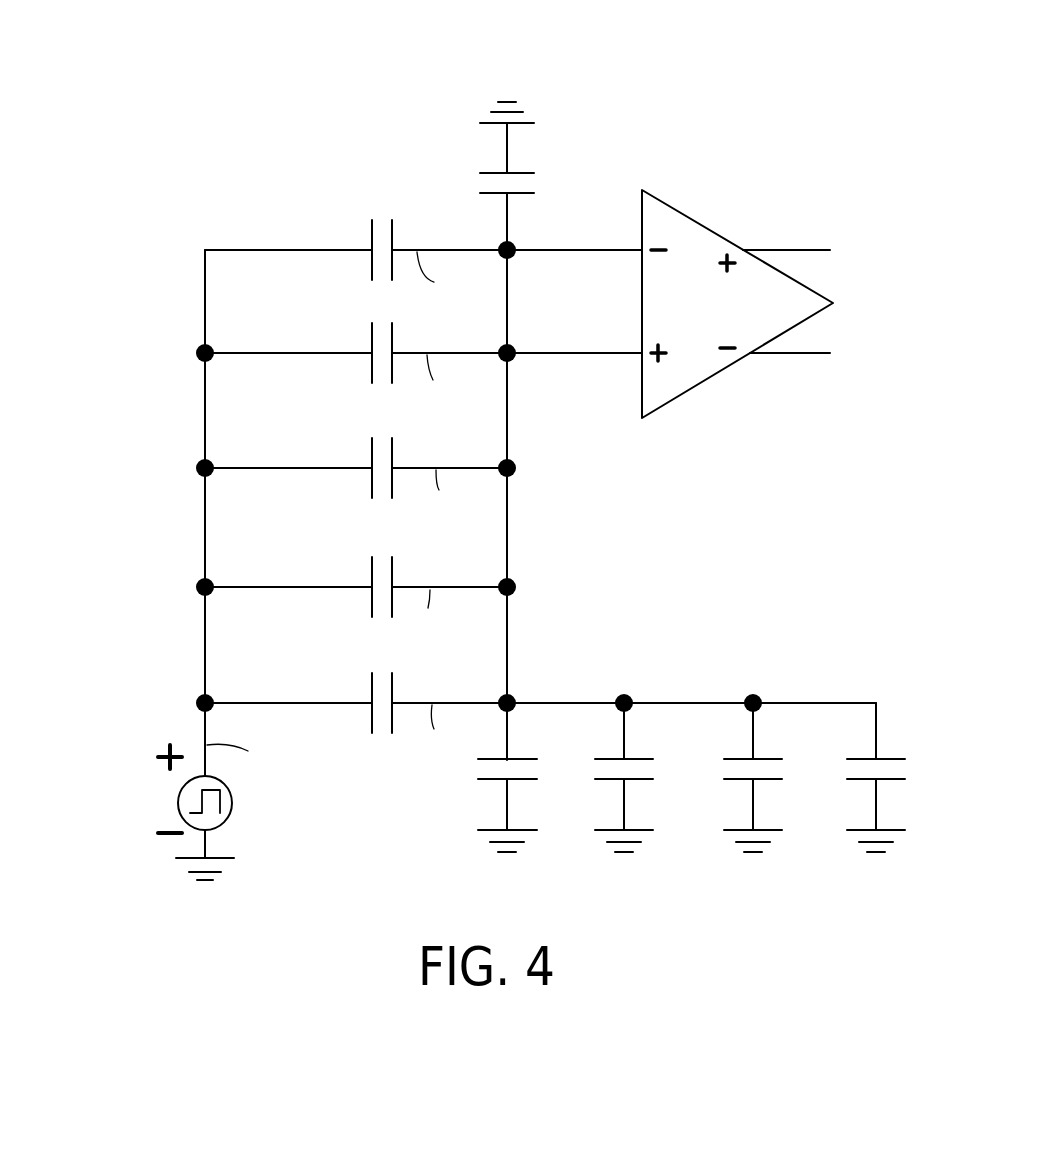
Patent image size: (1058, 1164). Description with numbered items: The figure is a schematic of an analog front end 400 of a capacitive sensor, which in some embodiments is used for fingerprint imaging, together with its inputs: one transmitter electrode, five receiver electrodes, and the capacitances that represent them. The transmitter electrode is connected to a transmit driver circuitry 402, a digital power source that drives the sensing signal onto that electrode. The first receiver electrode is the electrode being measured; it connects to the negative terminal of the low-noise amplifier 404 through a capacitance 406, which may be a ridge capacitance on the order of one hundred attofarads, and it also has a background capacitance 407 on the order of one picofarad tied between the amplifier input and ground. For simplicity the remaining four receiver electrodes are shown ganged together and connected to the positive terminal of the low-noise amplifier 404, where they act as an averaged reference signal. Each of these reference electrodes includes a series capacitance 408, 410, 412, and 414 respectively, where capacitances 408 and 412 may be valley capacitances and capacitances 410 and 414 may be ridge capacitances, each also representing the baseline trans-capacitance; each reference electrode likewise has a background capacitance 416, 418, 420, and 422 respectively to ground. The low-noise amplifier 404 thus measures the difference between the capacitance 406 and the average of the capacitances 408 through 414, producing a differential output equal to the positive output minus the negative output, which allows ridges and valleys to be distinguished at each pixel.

The analog front end 400 is at (272, 120).
The transmit driver circuitry 402 is at (177, 806).
The low-noise amplifier 404 is at (692, 217).
The capacitance 406 is at (370, 238).
The background capacitance 407 is at (523, 172).
The capacitance 408 is at (370, 341).
The capacitance 410 is at (370, 456).
The capacitance 412 is at (370, 575).
The capacitance 414 is at (370, 691).
The background capacitance 416 is at (503, 780).
The background capacitance 418 is at (620, 780).
The background capacitance 420 is at (749, 780).
The background capacitance 422 is at (872, 780).